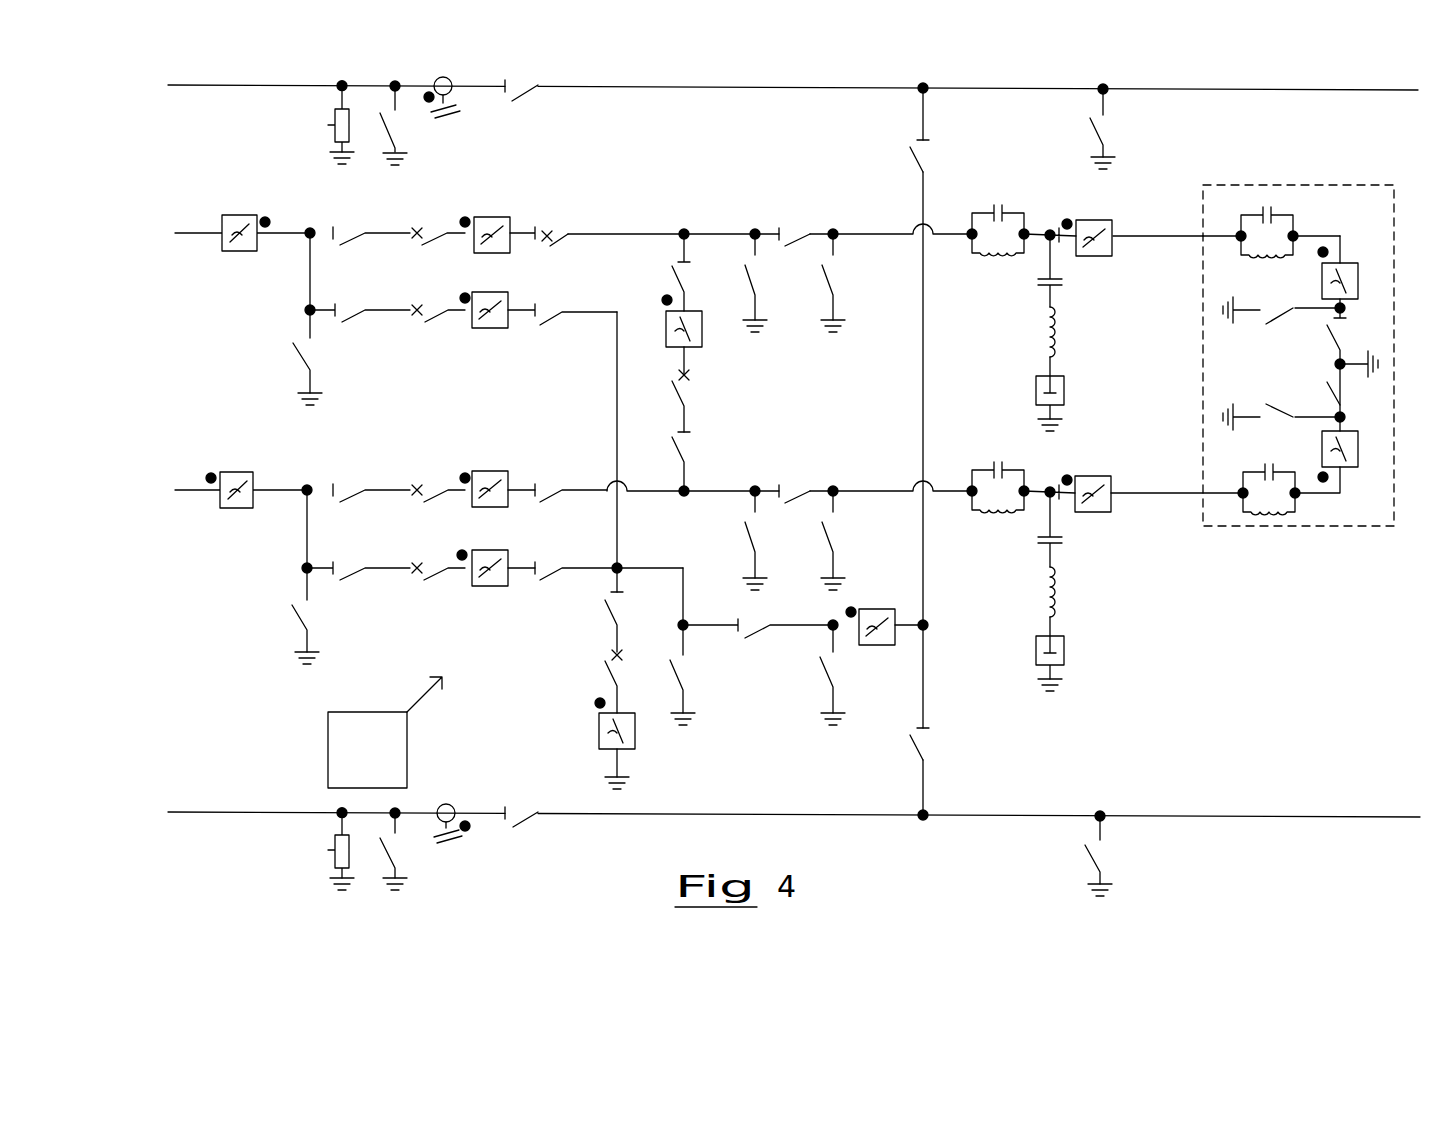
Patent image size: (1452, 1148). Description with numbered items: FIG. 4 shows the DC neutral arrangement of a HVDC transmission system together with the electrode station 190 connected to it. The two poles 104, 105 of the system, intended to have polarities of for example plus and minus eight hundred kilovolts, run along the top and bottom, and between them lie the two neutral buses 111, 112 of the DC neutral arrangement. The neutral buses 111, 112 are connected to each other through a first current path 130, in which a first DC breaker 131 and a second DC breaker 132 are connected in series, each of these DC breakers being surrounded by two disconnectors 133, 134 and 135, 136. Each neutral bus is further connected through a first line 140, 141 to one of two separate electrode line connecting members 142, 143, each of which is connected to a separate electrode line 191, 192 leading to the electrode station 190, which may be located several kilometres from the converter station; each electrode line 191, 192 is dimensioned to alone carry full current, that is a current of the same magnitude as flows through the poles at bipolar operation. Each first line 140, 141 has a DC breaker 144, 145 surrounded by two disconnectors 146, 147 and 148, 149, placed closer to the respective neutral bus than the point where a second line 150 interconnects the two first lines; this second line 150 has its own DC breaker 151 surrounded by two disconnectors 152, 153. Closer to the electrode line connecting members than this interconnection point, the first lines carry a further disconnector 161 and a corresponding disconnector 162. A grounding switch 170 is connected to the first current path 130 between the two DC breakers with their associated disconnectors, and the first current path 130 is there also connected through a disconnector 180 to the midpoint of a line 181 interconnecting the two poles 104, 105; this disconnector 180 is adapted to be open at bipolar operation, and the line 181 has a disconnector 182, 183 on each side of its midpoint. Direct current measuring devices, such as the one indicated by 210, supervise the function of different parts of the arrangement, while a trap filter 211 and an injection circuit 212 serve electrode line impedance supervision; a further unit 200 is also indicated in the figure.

The pole 104 is at (657, 91).
The pole 105 is at (712, 813).
The neutral bus 111 is at (188, 237).
The neutral bus 112 is at (181, 488).
The first current path 130 is at (617, 405).
The first DC breaker 131 is at (437, 328).
The second DC breaker 132 is at (433, 580).
The disconnector 133 is at (350, 325).
The disconnector 134 is at (546, 320).
The disconnector 135 is at (350, 564).
The disconnector 136 is at (550, 566).
The first line 140 is at (602, 233).
The first line 141 is at (640, 489).
The electrode line connecting member 142 is at (1086, 270).
The electrode line connecting member 143 is at (1048, 476).
The DC breaker 144 is at (432, 223).
The DC breaker 145 is at (433, 483).
The disconnector 146 is at (349, 227).
The disconnector 147 is at (553, 246).
The disconnector 148 is at (342, 483).
The disconnector 149 is at (541, 490).
The second line 150 is at (686, 357).
The DC breaker 151 is at (690, 392).
The disconnector 152 is at (684, 277).
The disconnector 153 is at (688, 447).
The disconnector 161 is at (788, 228).
The disconnector 162 is at (787, 493).
The grounding switch 170 is at (610, 657).
The disconnector 180 is at (753, 640).
The line 181 is at (932, 390).
The disconnector 182 is at (932, 160).
The disconnector 183 is at (932, 737).
The electrode station 190 is at (1273, 528).
The electrode line 191 is at (1142, 235).
The electrode line 192 is at (1147, 488).
The control unit 200 is at (408, 737).
The direct current measuring device 210 is at (496, 218).
The trap filter 211 is at (990, 260).
The injection circuit 212 is at (1058, 335).